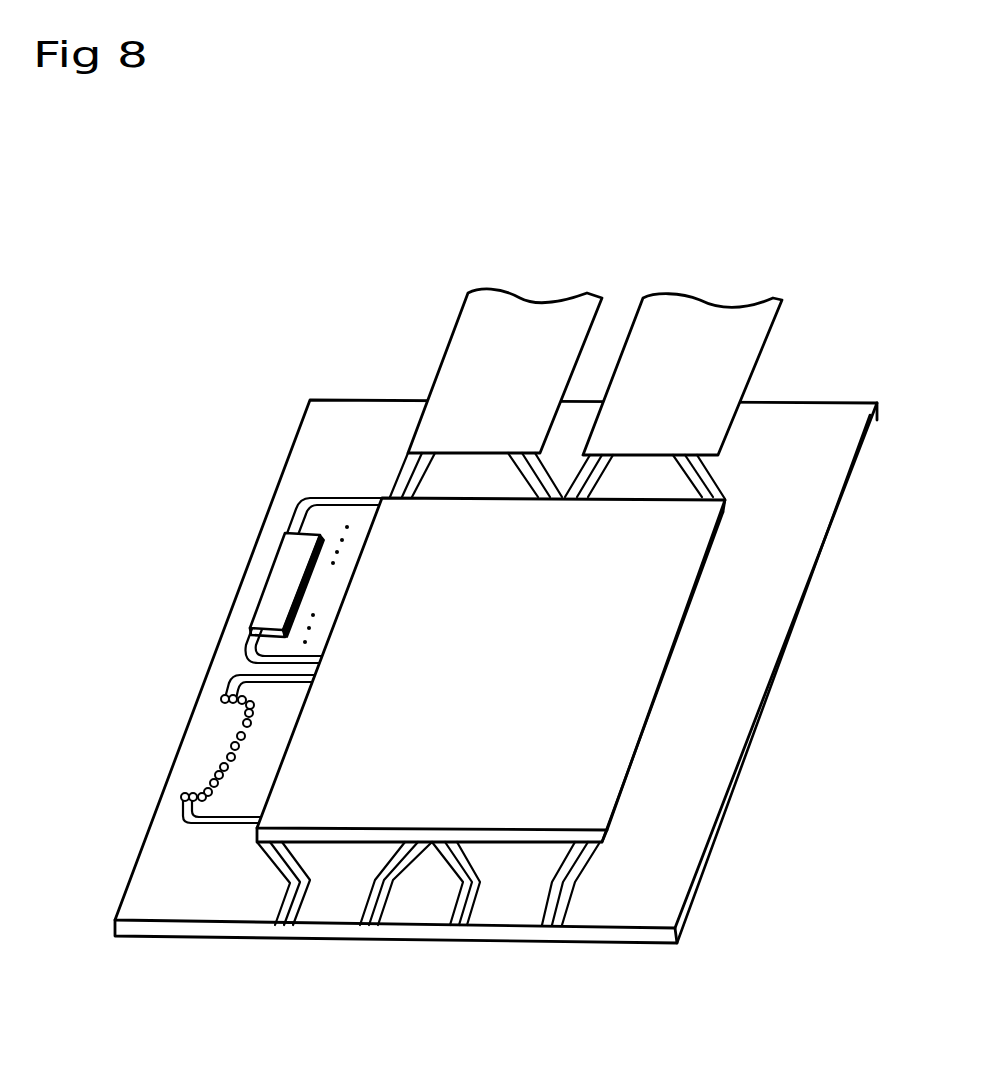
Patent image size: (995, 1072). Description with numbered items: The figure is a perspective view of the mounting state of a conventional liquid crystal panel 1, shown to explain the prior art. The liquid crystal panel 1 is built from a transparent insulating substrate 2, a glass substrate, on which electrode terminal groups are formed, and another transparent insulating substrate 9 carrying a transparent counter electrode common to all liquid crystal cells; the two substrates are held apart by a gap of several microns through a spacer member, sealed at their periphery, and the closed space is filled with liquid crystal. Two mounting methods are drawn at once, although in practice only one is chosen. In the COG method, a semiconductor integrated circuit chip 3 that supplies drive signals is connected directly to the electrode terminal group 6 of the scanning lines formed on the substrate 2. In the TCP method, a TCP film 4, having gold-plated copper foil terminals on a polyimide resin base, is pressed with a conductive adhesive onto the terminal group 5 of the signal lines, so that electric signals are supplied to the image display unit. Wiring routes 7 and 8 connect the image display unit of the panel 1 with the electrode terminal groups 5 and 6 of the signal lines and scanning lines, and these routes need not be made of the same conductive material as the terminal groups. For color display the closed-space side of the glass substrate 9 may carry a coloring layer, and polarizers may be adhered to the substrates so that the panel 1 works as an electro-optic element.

The liquid crystal panel 1 is at (516, 671).
The transparent insulating substrate 2 is at (688, 778).
The semiconductor integrated circuit chip 3 is at (280, 587).
The TCP film 4 is at (678, 363).
The terminal group of signal lines 5 is at (428, 883).
The electrode terminal group of scanning lines 6 is at (222, 746).
The wiring route 7 is at (757, 448).
The wiring route 8 is at (314, 580).
The transparent insulating substrate 9 is at (627, 698).